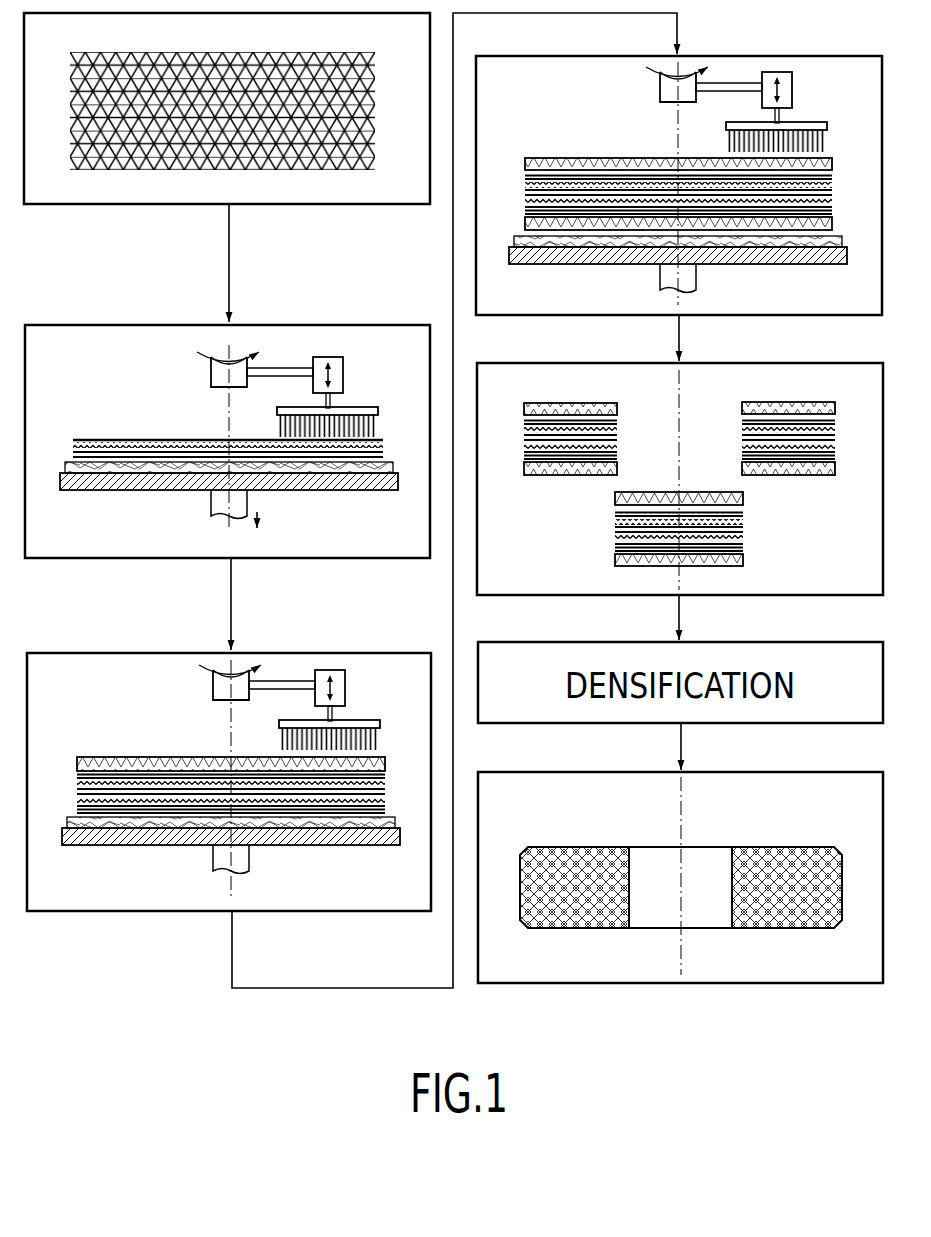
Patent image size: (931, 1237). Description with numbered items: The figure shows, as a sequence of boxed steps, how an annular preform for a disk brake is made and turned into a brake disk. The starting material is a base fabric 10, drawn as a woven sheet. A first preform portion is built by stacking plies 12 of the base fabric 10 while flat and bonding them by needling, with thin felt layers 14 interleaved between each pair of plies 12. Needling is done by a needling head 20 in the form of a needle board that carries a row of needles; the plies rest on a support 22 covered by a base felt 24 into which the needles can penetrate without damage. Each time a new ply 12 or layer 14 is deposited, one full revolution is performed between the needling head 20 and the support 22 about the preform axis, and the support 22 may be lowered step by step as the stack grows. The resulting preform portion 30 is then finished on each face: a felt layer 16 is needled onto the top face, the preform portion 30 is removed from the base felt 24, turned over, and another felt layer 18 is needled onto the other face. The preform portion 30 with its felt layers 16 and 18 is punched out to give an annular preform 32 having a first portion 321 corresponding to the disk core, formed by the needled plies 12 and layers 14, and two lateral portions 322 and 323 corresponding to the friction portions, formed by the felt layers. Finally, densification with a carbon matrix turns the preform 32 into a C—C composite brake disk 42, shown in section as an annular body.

The base fabric 10 is at (95, 175).
The plies 12 is at (73, 441).
The thin felt layers 14 is at (383, 446).
The felt layer 16 is at (77, 765).
The felt layer 18 is at (555, 158).
The needling head 20 is at (355, 403).
The support 22 is at (339, 486).
The base felt 24 is at (63, 467).
The preform portion 30 is at (70, 803).
The annular preform 32 is at (562, 478).
The first portion 321 is at (740, 416).
The lateral portion 322 is at (772, 476).
The lateral portion 323 is at (752, 400).
The C—C composite brake disk 42 is at (800, 845).